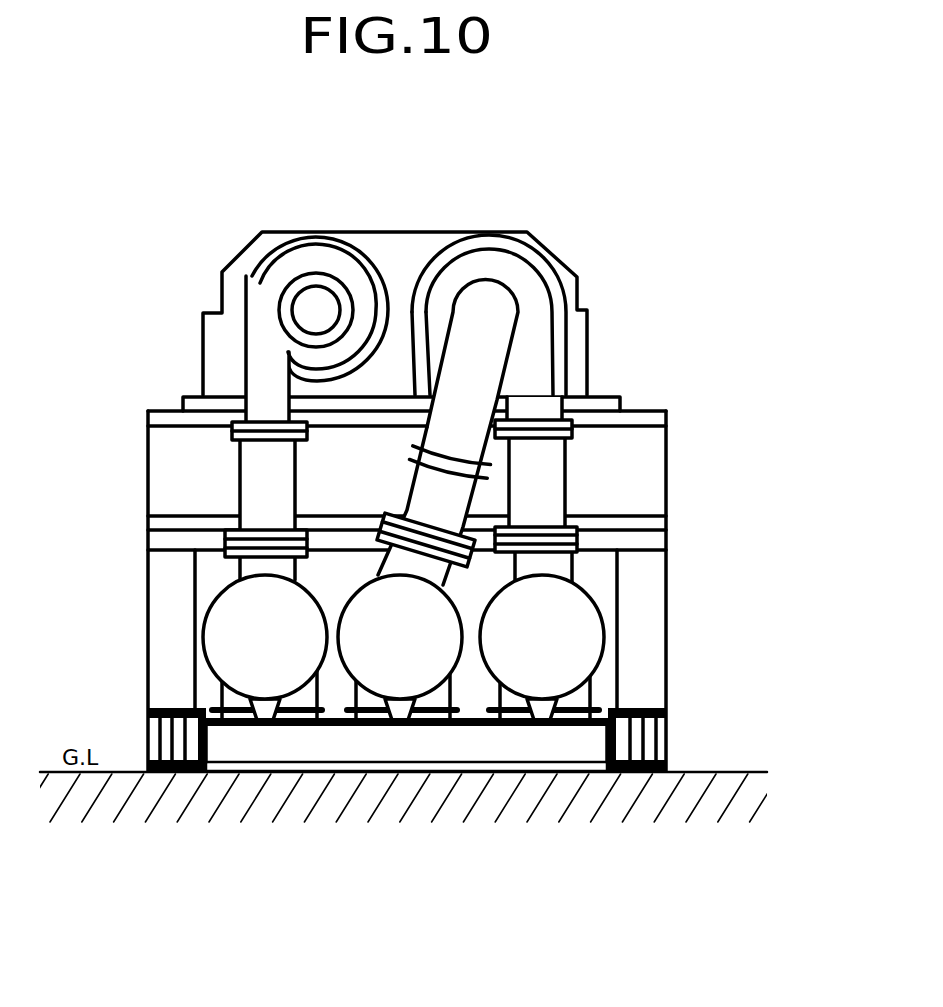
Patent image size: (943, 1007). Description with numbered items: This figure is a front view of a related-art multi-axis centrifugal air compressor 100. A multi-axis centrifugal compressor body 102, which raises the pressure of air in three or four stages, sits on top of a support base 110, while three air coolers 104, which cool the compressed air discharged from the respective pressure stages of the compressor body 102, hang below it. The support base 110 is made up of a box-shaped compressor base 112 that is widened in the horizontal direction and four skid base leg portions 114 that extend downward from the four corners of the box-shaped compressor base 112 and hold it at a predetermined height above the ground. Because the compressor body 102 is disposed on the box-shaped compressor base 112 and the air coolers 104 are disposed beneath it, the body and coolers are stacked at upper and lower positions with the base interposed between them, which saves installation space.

The multi-axis centrifugal air compressor 100 is at (573, 221).
The multi-axis centrifugal compressor body 102 is at (398, 226).
The air cooler 104 is at (254, 672).
The support base 110 is at (140, 474).
The box-shaped compressor base 112 is at (666, 440).
The skid base leg portion 114 is at (148, 636).